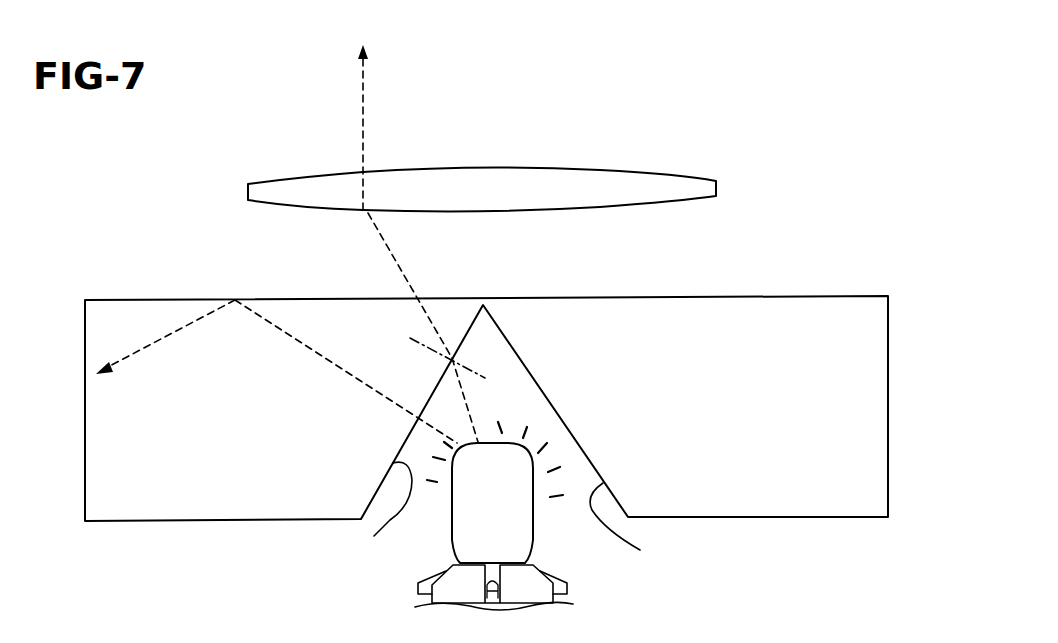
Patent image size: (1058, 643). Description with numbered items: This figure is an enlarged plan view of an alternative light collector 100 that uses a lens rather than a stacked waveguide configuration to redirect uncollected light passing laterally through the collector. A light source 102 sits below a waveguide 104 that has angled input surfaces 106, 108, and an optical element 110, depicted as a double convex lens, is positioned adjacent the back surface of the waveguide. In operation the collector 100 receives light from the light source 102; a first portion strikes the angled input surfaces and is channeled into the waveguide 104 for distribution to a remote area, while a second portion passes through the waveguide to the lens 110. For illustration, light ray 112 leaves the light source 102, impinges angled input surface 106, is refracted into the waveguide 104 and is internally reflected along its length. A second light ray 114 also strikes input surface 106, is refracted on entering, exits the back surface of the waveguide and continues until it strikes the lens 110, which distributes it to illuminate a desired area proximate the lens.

The light collector 100 is at (614, 86).
The light source 102 is at (533, 515).
The waveguide 104 is at (203, 488).
The angled input surface 106 is at (374, 536).
The angled input surface 108 is at (640, 550).
The optical element 110 is at (572, 168).
The light ray 112 is at (142, 332).
The second light ray 114 is at (377, 228).